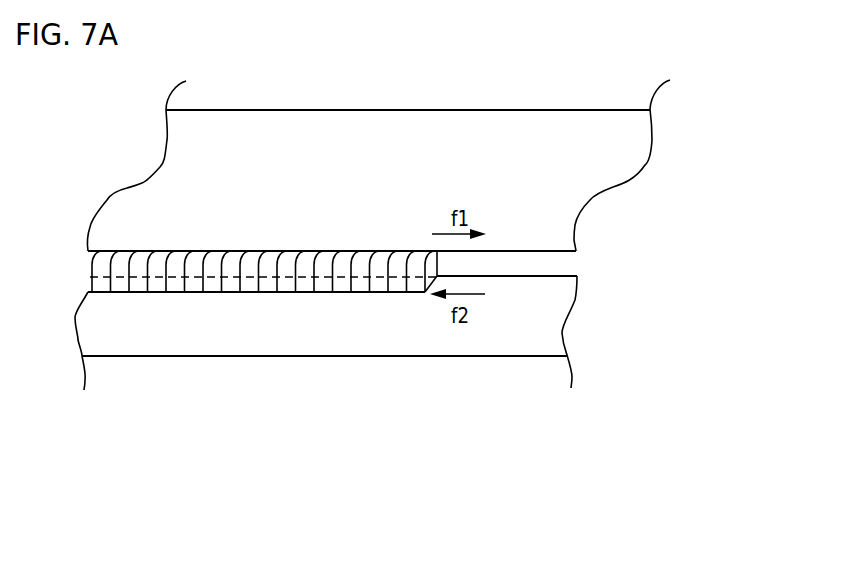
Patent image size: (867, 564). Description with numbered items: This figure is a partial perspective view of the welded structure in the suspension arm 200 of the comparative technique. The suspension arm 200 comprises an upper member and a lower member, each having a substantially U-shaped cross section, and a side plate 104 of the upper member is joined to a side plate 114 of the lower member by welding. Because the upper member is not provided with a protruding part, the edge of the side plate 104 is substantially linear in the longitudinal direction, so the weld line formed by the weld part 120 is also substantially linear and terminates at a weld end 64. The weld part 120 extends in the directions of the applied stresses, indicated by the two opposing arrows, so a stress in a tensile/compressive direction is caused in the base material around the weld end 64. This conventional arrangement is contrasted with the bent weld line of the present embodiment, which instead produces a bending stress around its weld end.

The suspension arm 200 is at (388, 492).
The side plate 104 is at (532, 123).
The side plate 114 is at (291, 345).
The weld end 64 is at (438, 257).
The weld part 120 is at (123, 256).